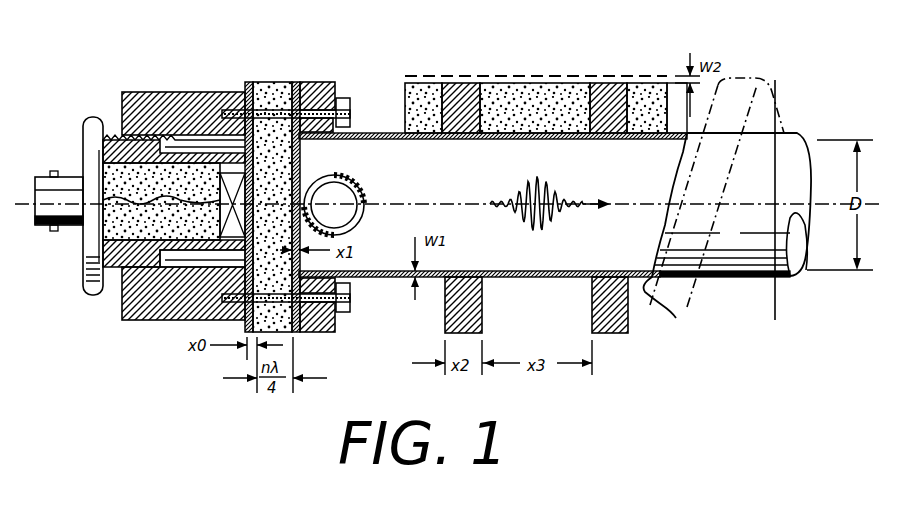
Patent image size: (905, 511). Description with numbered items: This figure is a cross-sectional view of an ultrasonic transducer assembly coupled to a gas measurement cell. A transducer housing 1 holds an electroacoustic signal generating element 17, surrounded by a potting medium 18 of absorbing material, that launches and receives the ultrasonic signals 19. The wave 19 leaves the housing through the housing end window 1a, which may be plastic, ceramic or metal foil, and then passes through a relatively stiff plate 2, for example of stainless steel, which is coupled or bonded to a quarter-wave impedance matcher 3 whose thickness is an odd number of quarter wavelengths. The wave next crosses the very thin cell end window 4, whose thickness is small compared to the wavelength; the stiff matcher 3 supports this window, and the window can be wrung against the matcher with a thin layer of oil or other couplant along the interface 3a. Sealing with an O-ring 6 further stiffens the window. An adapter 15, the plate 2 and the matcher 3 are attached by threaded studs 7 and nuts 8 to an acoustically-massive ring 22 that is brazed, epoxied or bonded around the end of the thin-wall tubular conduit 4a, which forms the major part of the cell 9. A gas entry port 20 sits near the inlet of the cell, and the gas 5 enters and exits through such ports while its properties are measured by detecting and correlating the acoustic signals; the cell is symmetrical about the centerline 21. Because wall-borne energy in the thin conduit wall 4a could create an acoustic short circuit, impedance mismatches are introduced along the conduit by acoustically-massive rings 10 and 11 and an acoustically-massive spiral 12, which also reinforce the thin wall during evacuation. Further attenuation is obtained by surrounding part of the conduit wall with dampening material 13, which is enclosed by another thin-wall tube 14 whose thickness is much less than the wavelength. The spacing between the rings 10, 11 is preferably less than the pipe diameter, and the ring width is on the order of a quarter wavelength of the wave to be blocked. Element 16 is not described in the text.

The transducer housing 1 is at (95, 117).
The housing end window 1a is at (200, 268).
The plate 2 is at (252, 80).
The quarter-wave impedance matcher 3 is at (278, 82).
The interface 3a is at (281, 82).
The cell end window 4 is at (301, 158).
The thin-wall tubular conduit 4a is at (413, 140).
The gas 5 is at (364, 152).
The O-ring 6 is at (332, 128).
The threaded studs 7 is at (353, 120).
The nuts 8 is at (338, 98).
The cell 9 is at (405, 90).
The acoustically-massive ring 10 is at (483, 92).
The acoustically-massive ring 11 is at (587, 100).
The acoustically-massive spiral 12 is at (740, 83).
The dampening material 13 is at (643, 93).
The thin-wall tube 14 is at (659, 80).
The adapter 15 is at (147, 321).
The lower body part 16 is at (115, 268).
The electroacoustic signal generating element 17 is at (206, 167).
The potting medium 18 is at (148, 177).
The ultrasonic signals 19 is at (542, 222).
The gas entry port 20 is at (363, 213).
The centerline 21 is at (778, 303).
The acoustically-massive ring 22 is at (328, 336).